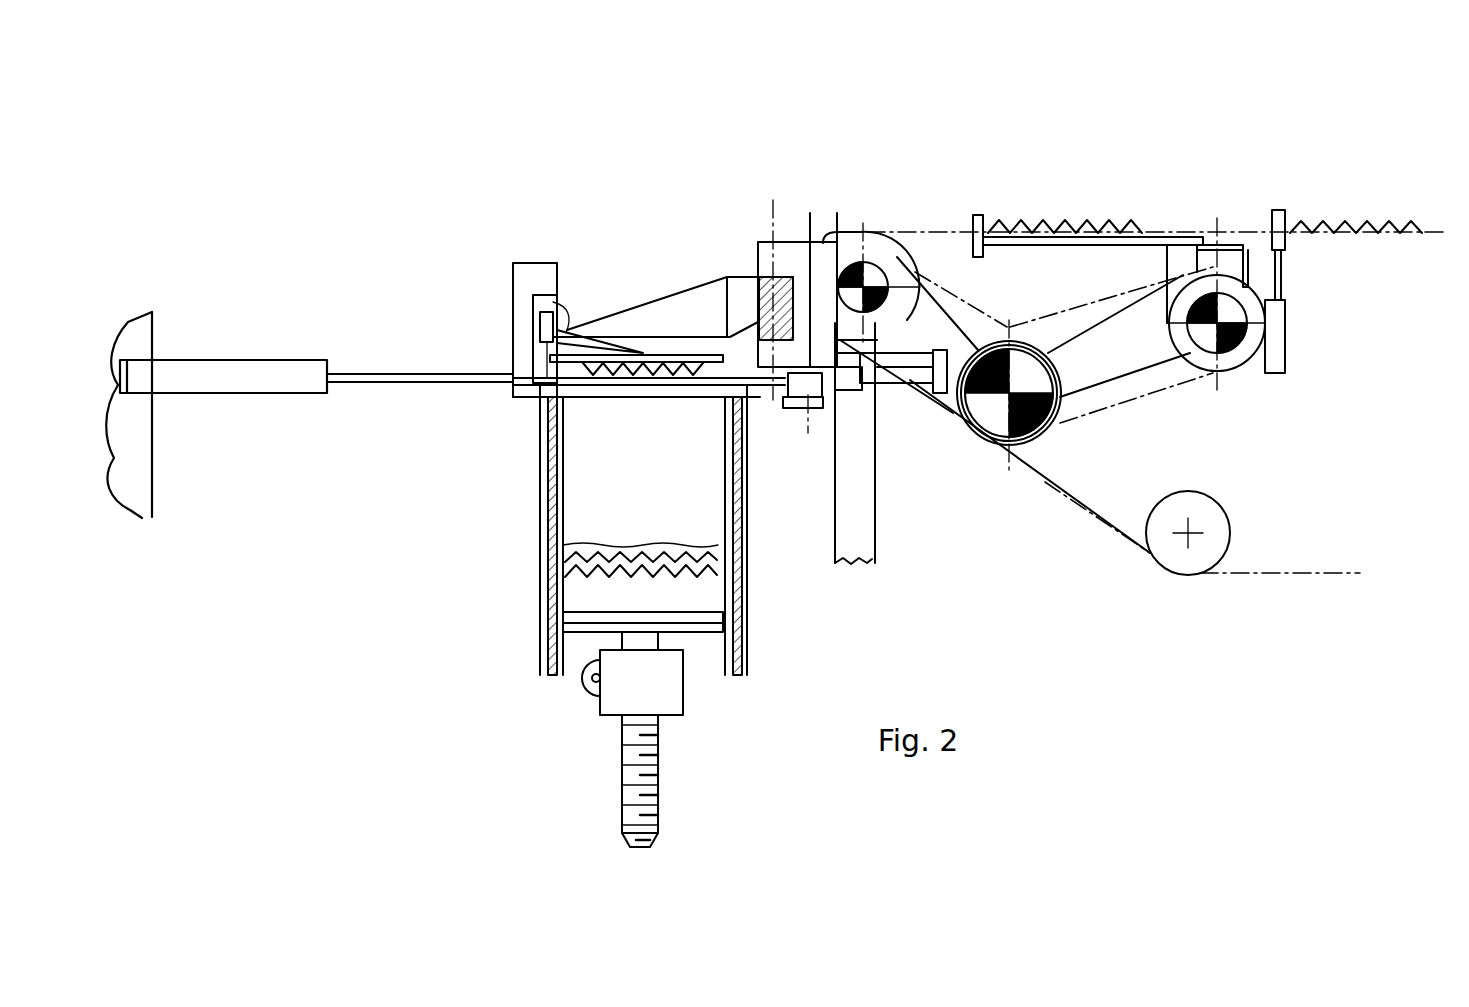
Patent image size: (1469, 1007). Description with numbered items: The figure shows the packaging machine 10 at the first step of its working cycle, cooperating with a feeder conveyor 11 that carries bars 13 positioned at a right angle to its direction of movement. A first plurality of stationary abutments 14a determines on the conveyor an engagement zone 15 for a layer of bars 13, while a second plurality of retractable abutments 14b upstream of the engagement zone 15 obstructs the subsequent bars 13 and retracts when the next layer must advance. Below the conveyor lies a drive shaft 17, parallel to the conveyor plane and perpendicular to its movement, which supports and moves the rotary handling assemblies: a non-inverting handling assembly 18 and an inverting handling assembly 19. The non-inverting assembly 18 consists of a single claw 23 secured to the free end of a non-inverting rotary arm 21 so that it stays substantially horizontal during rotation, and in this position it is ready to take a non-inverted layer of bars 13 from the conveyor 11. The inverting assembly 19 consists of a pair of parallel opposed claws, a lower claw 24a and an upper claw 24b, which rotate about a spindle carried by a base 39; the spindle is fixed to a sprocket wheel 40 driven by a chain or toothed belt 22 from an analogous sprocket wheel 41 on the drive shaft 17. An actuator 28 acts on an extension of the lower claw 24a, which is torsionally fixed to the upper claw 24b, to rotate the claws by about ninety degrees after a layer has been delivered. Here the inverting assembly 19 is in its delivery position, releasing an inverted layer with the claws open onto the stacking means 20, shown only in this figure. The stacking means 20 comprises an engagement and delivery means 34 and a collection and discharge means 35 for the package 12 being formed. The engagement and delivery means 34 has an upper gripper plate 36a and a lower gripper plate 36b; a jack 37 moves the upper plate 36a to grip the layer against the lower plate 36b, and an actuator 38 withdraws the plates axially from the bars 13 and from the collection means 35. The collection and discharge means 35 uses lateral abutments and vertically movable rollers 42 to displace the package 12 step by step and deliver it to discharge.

The packaging machine 10 is at (830, 157).
The feeder conveyor 11 is at (925, 230).
The package 12 is at (570, 572).
The bars 13 is at (1097, 222).
The stationary abutments 14a is at (982, 222).
The retractable abutments 14b is at (1282, 220).
The engagement zone 15 is at (985, 173).
The drive shaft 17 is at (1060, 447).
The non-inverting rotary handling assembly 18 is at (1207, 262).
The inverting rotary handling assembly 19 is at (767, 242).
The stacking means 20 is at (437, 480).
The non-inverting rotary arm 21 is at (1127, 353).
The chain or toothed belt 22 is at (937, 407).
The claw 23 is at (1147, 235).
The lower claw 24a is at (730, 383).
The upper claw 24b is at (673, 337).
The actuator 28 is at (920, 363).
The engagement and delivery means 34 is at (488, 215).
The collection and discharge means 35 is at (712, 500).
The upper gripper plate 36a is at (577, 357).
The lower gripper plate 36b is at (540, 400).
The jack 37 is at (552, 313).
The actuator 38 is at (397, 378).
The base 39 is at (855, 520).
The sprocket wheel 40 is at (873, 240).
The sprocket wheel 41 is at (1012, 447).
The vertically movable rollers 42 is at (660, 690).